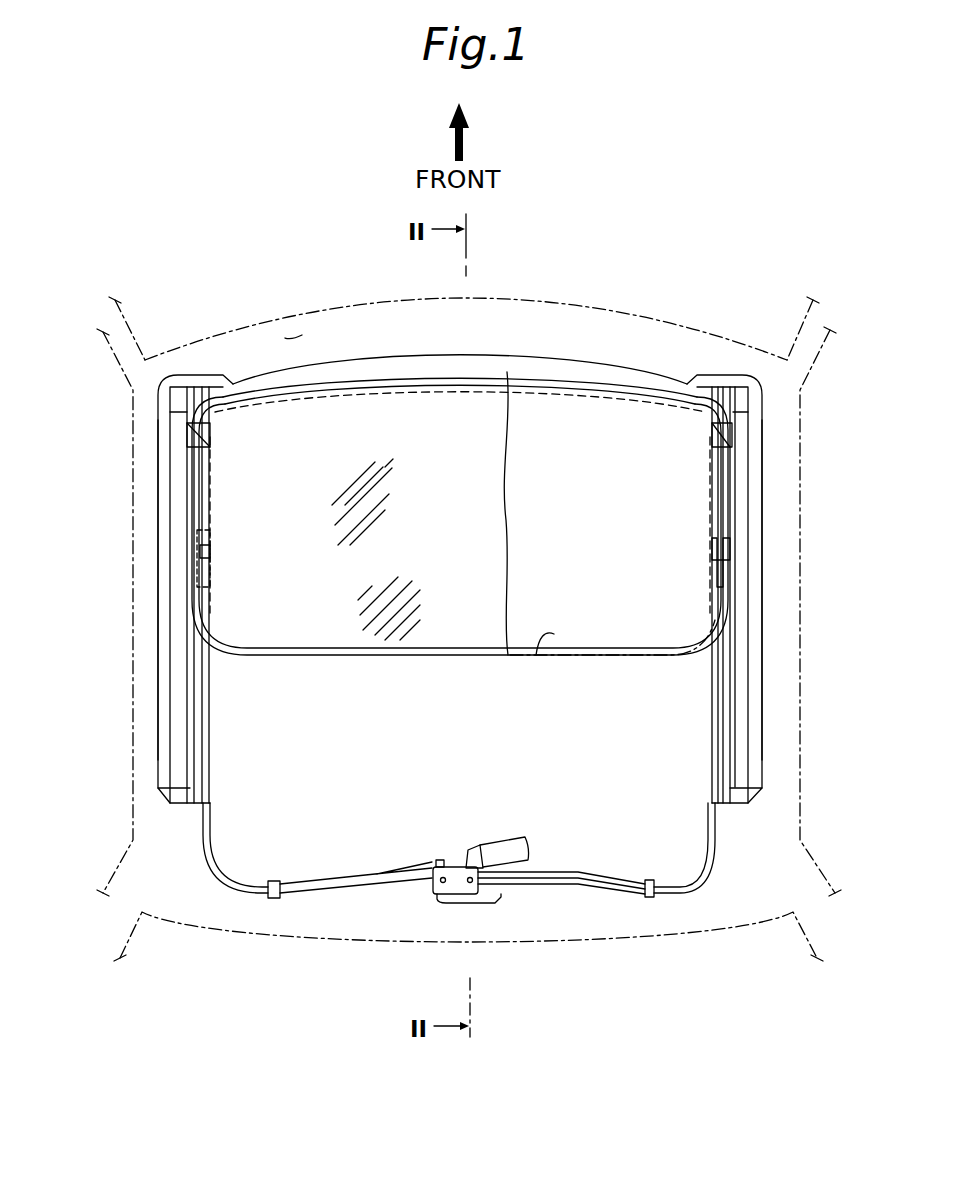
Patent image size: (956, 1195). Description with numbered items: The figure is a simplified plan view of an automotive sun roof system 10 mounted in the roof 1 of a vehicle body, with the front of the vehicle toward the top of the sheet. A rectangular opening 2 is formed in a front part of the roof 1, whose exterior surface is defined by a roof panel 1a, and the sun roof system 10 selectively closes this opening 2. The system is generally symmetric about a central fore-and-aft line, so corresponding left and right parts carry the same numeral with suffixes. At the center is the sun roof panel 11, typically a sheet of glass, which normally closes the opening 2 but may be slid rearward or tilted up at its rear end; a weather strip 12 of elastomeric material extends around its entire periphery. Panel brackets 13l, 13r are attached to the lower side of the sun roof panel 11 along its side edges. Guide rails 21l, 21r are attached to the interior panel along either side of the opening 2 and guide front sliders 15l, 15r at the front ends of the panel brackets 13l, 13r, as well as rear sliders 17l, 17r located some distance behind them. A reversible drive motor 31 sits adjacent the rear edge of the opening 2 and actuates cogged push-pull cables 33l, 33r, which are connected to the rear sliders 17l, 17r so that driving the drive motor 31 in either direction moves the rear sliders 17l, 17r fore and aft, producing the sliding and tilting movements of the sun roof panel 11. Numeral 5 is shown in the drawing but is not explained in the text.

The roof 1 is at (211, 288).
The roof panel 1a is at (290, 333).
The opening 2 is at (554, 634).
The roof panel 5 is at (550, 360).
The sun roof system 10 is at (352, 335).
The sun roof panel 11 is at (387, 655).
The weather strip 12 is at (401, 384).
The panel bracket 13l is at (205, 510).
The panel bracket 13r is at (723, 513).
The front slider 15l is at (205, 437).
The front slider 15r is at (712, 427).
The rear slider 17l is at (212, 550).
The rear slider 17r is at (712, 550).
The guide rail 21l is at (163, 602).
The guide rail 21r is at (757, 648).
The drive motor 31 is at (455, 830).
The push-pull cable 33l is at (220, 857).
The push-pull cable 33r is at (710, 832).